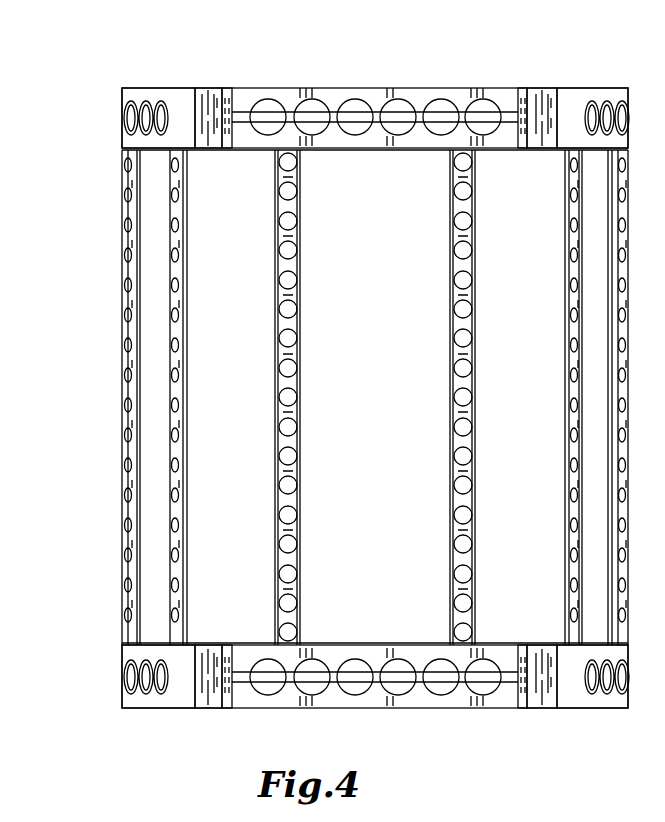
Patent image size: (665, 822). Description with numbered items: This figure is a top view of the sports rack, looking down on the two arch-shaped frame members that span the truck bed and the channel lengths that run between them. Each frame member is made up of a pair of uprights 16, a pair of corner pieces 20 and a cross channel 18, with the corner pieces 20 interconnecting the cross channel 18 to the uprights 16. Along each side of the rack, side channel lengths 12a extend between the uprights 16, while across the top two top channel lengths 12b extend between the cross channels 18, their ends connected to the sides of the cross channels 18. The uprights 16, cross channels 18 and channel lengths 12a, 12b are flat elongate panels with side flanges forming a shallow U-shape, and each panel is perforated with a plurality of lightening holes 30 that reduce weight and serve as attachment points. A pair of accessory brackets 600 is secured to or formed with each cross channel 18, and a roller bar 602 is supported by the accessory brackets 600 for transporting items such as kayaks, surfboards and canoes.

The side channel length 12a is at (122, 504).
The top channel length 12b is at (300, 353).
The upright 16 is at (145, 88).
The cross channel 18 is at (312, 88).
The corner piece 20 is at (205, 88).
The lightening hole 30 is at (385, 125).
The accessory bracket 600 is at (226, 88).
The roller bar 602 is at (377, 88).